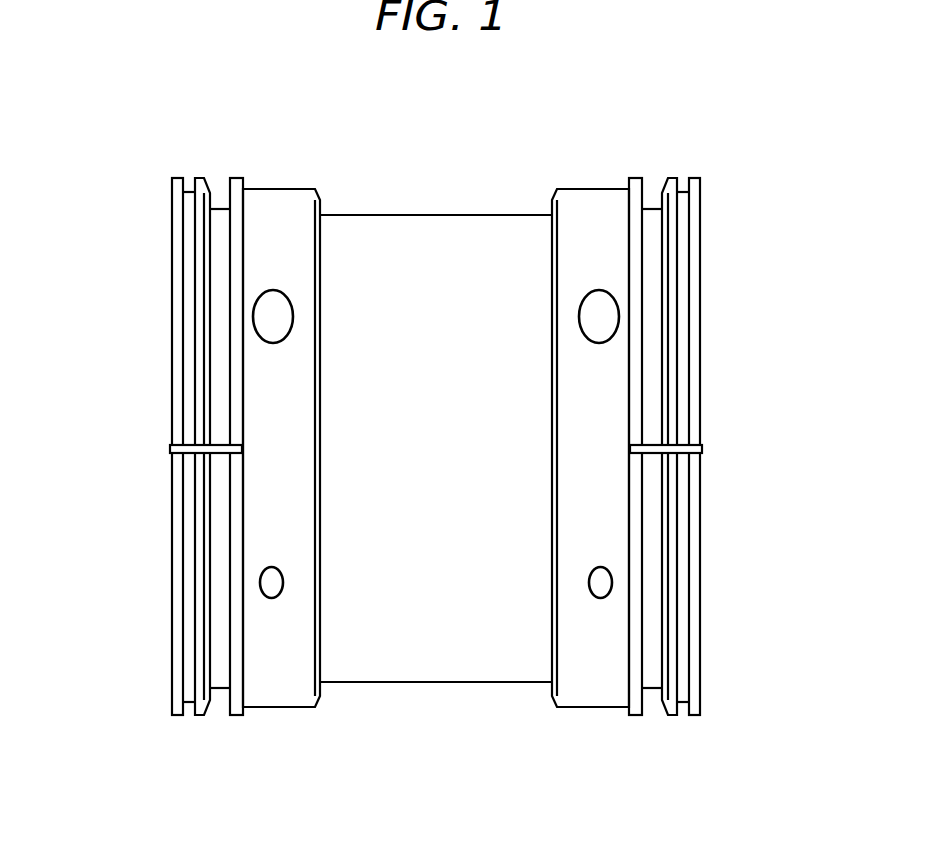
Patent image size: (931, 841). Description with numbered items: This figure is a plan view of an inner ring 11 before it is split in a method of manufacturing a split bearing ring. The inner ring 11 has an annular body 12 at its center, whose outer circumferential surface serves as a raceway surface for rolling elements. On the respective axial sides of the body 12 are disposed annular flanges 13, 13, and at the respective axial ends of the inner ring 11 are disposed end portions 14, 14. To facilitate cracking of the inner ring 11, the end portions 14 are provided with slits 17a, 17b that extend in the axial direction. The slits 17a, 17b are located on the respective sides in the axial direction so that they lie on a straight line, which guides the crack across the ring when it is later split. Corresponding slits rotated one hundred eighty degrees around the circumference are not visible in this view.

The inner ring 11 is at (437, 453).
The annular body 12 is at (403, 662).
The annular flange 13 is at (277, 684).
The end portion 14 is at (188, 684).
The slit 17a is at (170, 450).
The slit 17b is at (702, 450).